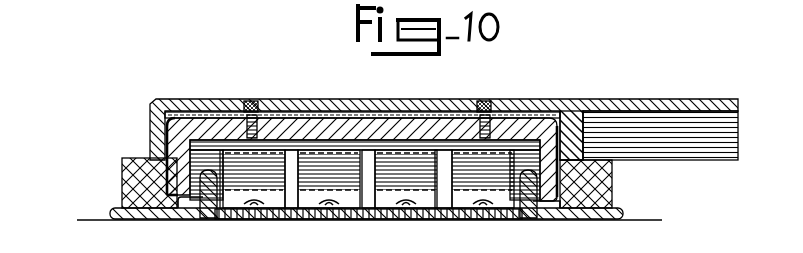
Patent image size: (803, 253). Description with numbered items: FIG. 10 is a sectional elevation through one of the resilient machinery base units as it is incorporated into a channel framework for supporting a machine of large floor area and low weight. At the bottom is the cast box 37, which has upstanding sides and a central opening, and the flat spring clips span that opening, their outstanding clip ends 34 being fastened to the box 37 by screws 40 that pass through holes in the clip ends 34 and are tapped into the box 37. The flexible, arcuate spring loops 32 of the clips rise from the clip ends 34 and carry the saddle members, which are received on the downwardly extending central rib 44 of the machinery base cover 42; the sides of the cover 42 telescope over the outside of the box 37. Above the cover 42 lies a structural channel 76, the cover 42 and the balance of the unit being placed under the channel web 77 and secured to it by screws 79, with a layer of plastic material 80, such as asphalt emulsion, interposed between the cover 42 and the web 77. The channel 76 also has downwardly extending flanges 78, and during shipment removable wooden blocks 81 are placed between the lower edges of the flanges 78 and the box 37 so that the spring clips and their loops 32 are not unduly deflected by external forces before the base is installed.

The channel 76 is at (150, 101).
The layer of plastic material 80 is at (193, 104).
The screws 79 is at (232, 104).
The machinery base cover 42 is at (316, 123).
The spring loops 32 is at (339, 157).
The central rib 44 is at (372, 150).
The web 77 is at (514, 100).
The flanges 78 is at (584, 131).
The wooden blocks 81 is at (135, 180).
The screws 40 is at (250, 208).
The clip ends 34 is at (300, 207).
The cast box 37 is at (597, 221).